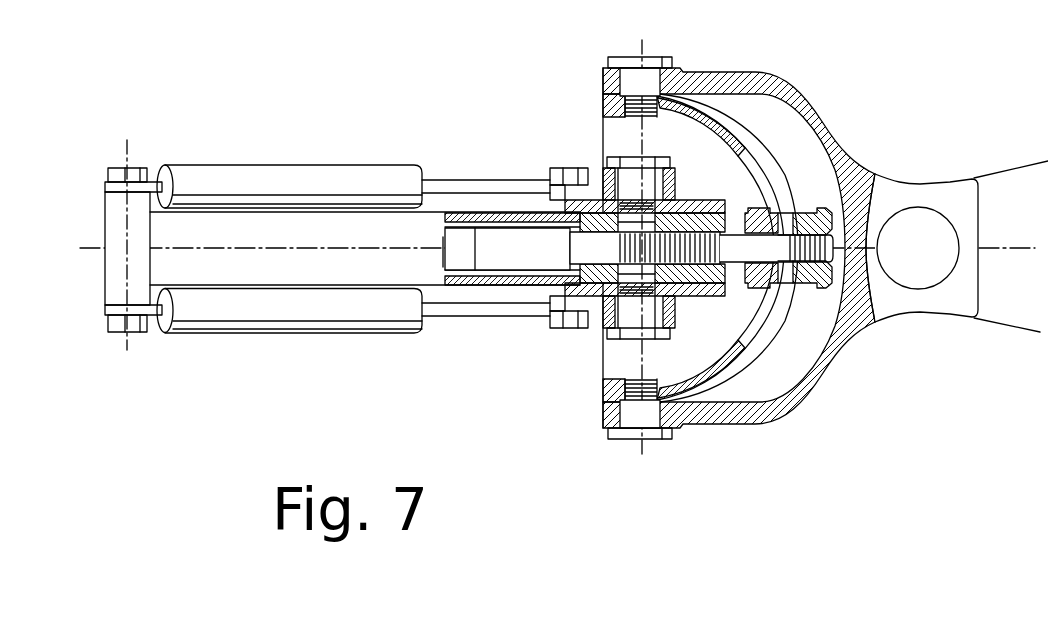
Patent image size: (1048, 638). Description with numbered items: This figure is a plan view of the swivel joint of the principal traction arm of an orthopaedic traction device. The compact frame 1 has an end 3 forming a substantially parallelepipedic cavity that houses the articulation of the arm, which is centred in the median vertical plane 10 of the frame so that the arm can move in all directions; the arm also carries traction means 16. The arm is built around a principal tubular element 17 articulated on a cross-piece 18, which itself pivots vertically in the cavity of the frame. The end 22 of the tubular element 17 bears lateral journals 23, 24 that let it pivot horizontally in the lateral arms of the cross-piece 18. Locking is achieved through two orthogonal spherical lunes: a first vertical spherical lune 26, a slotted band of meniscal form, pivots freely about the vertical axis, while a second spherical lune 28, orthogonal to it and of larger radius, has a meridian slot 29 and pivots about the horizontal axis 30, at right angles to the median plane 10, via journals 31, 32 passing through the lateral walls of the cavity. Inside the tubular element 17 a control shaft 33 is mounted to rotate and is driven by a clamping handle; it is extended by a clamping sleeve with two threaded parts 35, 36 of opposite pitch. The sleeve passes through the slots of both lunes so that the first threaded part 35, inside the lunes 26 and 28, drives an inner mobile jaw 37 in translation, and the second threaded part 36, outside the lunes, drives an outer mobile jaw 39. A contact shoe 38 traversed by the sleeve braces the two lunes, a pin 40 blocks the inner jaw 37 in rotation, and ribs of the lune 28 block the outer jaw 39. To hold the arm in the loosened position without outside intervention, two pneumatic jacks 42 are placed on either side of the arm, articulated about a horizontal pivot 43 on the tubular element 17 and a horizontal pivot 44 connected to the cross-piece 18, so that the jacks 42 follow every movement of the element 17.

The compact frame 1 is at (935, 190).
The end of the frame forming a cavity 3 is at (758, 80).
The median vertical plane 10 is at (1022, 250).
The traction means 16 is at (498, 263).
The principal tubular element 17 is at (382, 258).
The cross-piece 18 is at (672, 170).
The end of the element 22 is at (686, 293).
The lateral journal 23 is at (623, 157).
The lateral journal 24 is at (648, 339).
The first vertical spherical lune 26 is at (746, 216).
The second spherical lune 28 is at (734, 360).
The meridian slot 29 is at (755, 153).
The horizontal axis 30 is at (636, 84).
The journal 31 is at (672, 54).
The journal 32 is at (628, 440).
The control shaft 33 is at (463, 225).
The first threaded part 35 is at (680, 240).
The second threaded part 36 is at (835, 243).
The inner mobile jaw 37 is at (680, 215).
The contact shoe 38 is at (776, 290).
The outer mobile jaw 39 is at (812, 213).
The pin 40 is at (640, 208).
The jack 42 is at (329, 171).
The horizontal pivot 43 is at (132, 153).
The horizontal pivot 44 is at (566, 313).